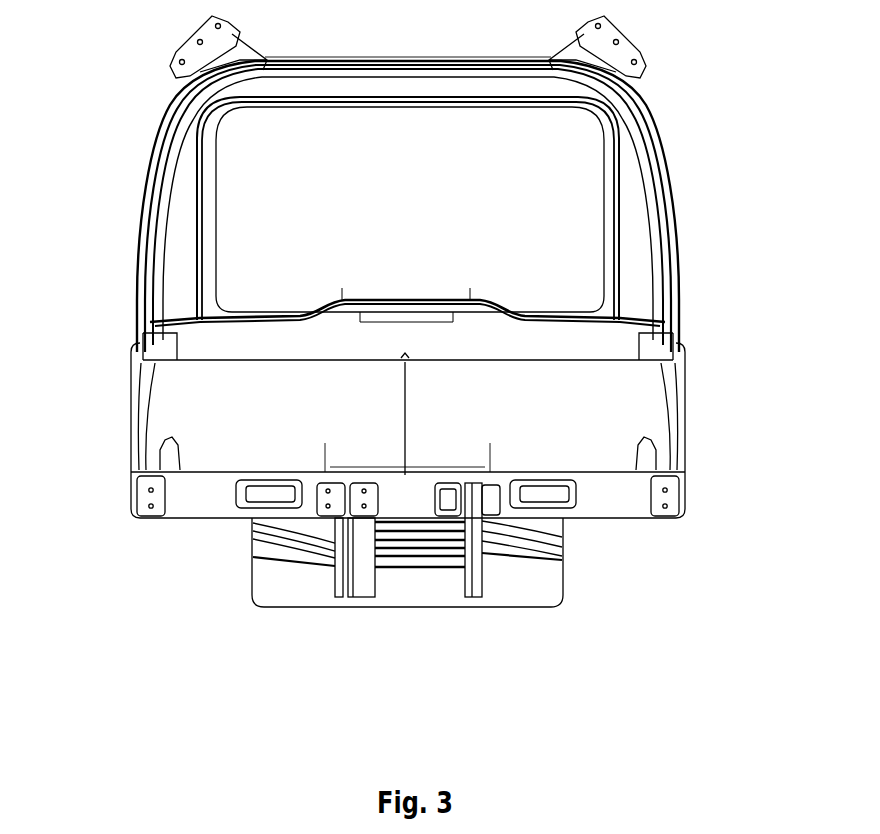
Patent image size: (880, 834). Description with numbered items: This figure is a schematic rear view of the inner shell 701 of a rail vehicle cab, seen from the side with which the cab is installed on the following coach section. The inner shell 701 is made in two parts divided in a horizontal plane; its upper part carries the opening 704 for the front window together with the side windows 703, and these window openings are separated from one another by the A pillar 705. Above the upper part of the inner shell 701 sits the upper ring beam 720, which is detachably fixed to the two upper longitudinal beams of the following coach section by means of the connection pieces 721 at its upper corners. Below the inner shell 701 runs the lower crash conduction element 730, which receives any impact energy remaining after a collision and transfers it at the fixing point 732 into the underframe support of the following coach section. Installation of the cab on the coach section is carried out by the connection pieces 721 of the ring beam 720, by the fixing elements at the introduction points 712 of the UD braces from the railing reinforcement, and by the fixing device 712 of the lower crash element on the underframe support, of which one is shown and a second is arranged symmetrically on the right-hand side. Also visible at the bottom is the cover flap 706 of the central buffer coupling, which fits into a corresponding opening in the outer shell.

The inner shell 701 is at (176, 113).
The side windows 703 is at (143, 210).
The opening for the front window 704 is at (578, 183).
The A pillar 705 is at (187, 197).
The cover flap of the central buffer coupling 706 is at (273, 593).
The fixing device 712 is at (153, 488).
The ring beam 720 is at (237, 53).
The connection piece 721 is at (197, 43).
The lower crash conduction element 730 is at (363, 565).
The fixing point 732 is at (340, 490).